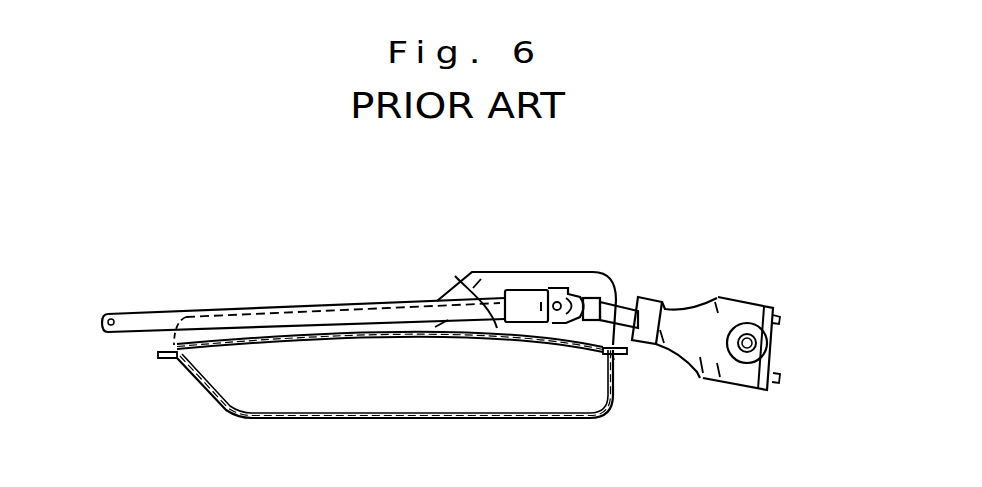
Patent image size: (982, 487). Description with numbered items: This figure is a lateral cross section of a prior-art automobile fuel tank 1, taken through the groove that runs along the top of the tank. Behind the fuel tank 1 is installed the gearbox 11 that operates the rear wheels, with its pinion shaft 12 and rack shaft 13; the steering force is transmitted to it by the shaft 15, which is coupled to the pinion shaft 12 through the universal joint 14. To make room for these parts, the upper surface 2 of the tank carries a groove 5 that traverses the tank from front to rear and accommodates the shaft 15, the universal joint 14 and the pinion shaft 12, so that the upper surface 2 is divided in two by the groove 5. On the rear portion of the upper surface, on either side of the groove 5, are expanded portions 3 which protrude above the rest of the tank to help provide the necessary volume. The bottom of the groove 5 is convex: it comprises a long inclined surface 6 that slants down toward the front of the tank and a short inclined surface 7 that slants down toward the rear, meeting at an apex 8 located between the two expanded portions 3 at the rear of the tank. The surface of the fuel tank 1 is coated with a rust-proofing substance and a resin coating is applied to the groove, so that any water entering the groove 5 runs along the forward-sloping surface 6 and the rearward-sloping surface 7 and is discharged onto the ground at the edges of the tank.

The fuel tank 1 is at (197, 403).
The upper surface 2 is at (295, 308).
The expanded portions 3 is at (508, 272).
The groove 5 is at (390, 336).
The long inclined surface 6 is at (274, 343).
The short inclined surface 7 is at (553, 335).
The apex 8 is at (458, 280).
The gearbox 11 is at (730, 310).
The pinion shaft 12 is at (628, 307).
The rack shaft 13 is at (753, 345).
The universal joint 14 is at (562, 288).
The shaft 15 is at (227, 308).